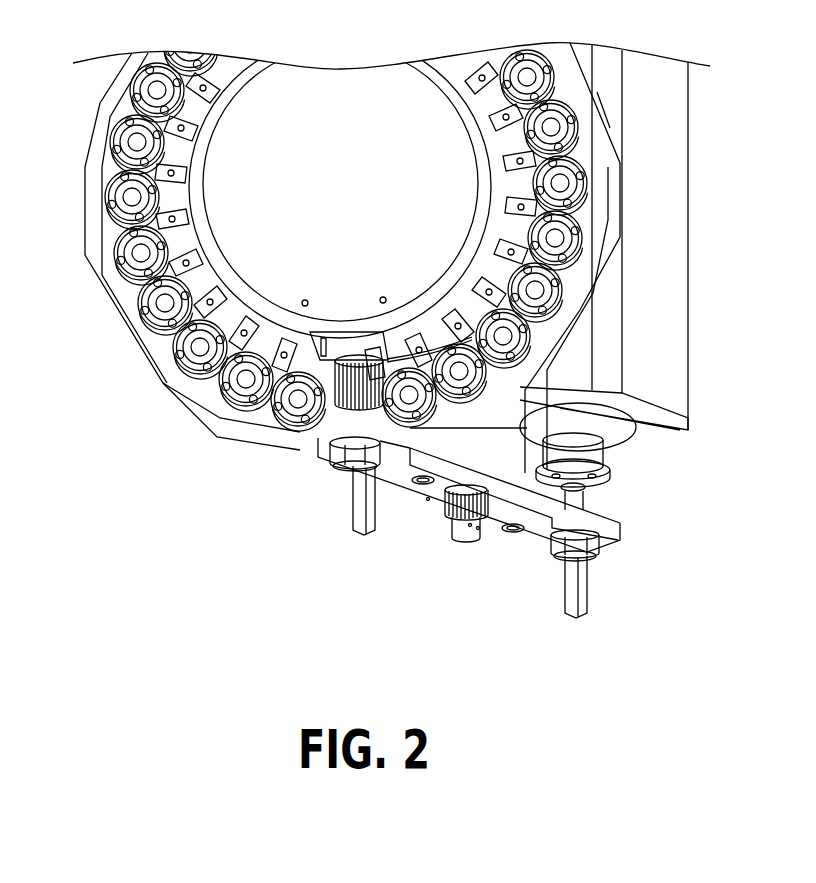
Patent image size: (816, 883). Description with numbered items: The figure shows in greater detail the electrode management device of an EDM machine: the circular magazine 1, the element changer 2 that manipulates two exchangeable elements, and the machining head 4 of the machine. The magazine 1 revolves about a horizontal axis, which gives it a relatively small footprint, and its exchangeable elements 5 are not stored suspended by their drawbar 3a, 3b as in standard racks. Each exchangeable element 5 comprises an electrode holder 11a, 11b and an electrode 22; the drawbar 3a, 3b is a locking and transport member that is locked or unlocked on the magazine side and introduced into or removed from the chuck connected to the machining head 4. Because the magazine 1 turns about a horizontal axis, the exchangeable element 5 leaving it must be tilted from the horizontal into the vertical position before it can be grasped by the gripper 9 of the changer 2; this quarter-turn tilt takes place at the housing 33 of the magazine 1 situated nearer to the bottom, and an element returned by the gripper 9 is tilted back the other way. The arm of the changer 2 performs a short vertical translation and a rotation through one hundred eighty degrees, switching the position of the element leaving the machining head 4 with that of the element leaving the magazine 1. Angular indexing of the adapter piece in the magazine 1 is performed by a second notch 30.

The magazine 1 is at (277, 230).
The element changer 2 is at (433, 492).
The drawbar 3a is at (634, 456).
The drawbar 3b is at (583, 508).
The machining head 4 is at (626, 462).
The exchangeable element 5 is at (648, 585).
The gripper 9 is at (317, 453).
The electrode holder 11a is at (467, 519).
The electrode holder 11b is at (467, 519).
The electrode 22 is at (360, 518).
The second notch 30 is at (100, 349).
The housing 33 is at (157, 304).